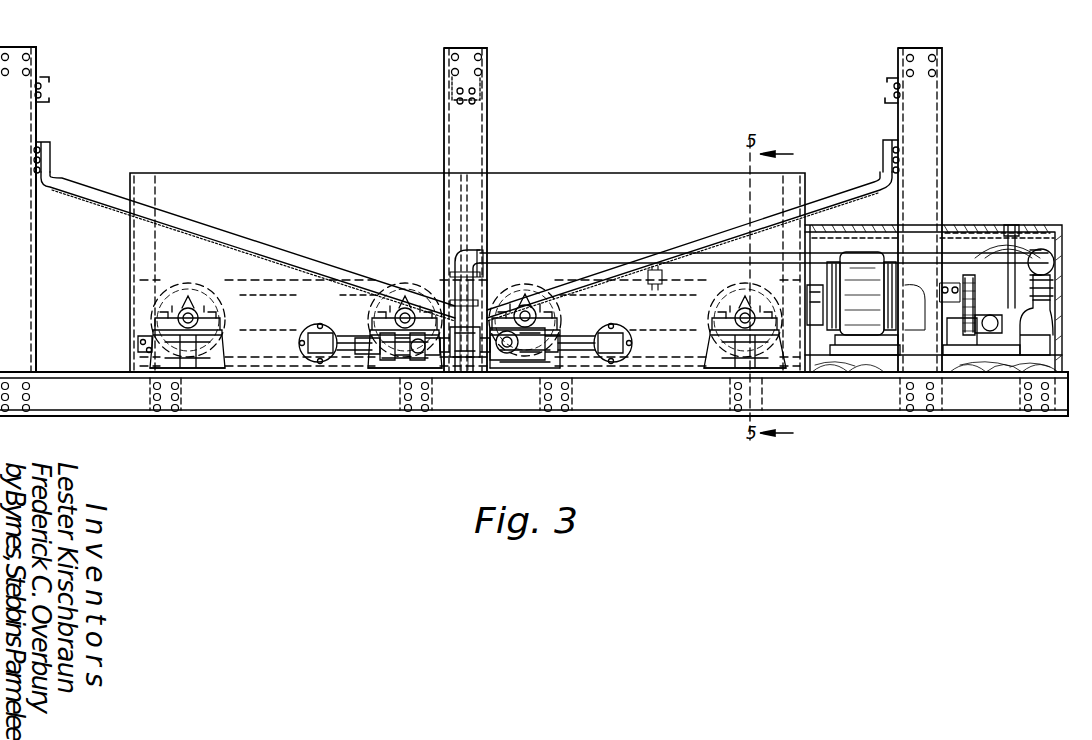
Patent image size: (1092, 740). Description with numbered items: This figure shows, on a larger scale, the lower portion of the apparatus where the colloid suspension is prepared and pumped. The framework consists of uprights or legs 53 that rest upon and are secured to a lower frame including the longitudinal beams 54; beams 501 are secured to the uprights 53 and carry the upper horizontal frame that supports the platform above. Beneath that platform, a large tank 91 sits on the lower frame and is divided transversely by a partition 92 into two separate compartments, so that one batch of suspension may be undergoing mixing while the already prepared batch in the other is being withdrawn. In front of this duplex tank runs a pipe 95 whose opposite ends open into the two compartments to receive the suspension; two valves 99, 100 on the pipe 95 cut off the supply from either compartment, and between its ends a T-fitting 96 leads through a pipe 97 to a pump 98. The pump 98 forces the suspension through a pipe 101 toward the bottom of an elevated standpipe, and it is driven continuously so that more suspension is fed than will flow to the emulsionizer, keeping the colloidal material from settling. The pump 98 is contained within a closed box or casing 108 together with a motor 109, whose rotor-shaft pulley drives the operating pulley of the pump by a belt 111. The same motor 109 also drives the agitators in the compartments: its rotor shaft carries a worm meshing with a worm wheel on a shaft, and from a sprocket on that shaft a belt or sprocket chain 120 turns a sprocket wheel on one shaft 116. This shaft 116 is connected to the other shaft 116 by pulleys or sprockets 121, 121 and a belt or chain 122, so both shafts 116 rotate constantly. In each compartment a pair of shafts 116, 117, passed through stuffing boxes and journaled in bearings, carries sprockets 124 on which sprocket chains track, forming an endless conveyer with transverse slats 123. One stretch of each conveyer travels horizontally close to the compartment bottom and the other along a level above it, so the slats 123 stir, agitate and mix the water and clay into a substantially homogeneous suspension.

The uprights or legs 53 is at (18, 117).
The beams 501 is at (46, 80).
The longitudinal beams 54 is at (832, 405).
The large tank 91 is at (632, 188).
The partition 92 is at (470, 206).
The pipe 95 is at (598, 340).
The T-fitting 96 is at (465, 372).
The pipe 97 is at (578, 252).
The pump 98 is at (1050, 332).
The valve 99 is at (395, 365).
The valve 100 is at (530, 372).
The pipe 101 is at (1016, 232).
The closed box or casing 108 is at (846, 252).
The motor 109 is at (862, 282).
The belt 111 is at (957, 230).
The shaft 116 is at (370, 368).
The shaft 117 is at (178, 362).
The belt or sprocket chain 120 is at (805, 290).
The pulleys or sprockets 121 is at (372, 310).
The belt or chain 122 is at (652, 280).
The transverse slats 123 is at (656, 268).
The sprockets 124 is at (508, 206).